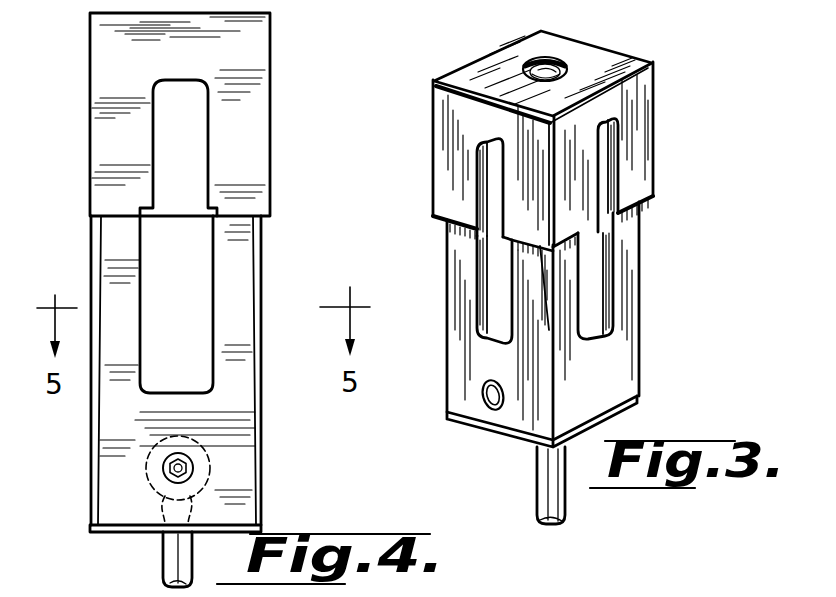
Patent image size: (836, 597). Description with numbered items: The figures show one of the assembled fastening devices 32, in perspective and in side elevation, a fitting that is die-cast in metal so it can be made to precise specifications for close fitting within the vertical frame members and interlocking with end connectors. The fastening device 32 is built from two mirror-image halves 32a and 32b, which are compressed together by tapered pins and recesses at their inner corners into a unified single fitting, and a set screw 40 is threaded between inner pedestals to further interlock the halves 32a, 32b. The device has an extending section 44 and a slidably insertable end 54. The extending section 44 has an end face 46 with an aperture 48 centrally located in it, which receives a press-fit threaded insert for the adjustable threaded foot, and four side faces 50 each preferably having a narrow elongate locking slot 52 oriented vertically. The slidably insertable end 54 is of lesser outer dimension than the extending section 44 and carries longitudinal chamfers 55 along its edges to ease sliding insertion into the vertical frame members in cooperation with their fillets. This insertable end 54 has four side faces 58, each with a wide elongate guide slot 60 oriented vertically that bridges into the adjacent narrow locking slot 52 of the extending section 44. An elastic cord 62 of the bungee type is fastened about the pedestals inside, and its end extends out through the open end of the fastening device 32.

In FIG. 4, the fastening device 32 is at (280, 58).
In FIG. 3, the fastening device 32 is at (668, 82).
In FIG. 3, the mirror-image half 32a is at (540, 48).
In FIG. 3, the mirror-image half 32b is at (433, 108).
In FIG. 3, the set screw 40 is at (488, 408).
In FIG. 4, the extending section 44 is at (272, 83).
In FIG. 3, the extending section 44 is at (655, 120).
In FIG. 3, the end face 46 is at (474, 76).
In FIG. 3, the aperture 48 is at (567, 68).
In FIG. 4, the side face 50 is at (250, 118).
In FIG. 3, the side face 50 is at (442, 163).
In FIG. 4, the locking slot 52 is at (204, 162).
In FIG. 3, the locking slot 52 is at (477, 202).
In FIG. 4, the slidably insertable end 54 is at (237, 405).
In FIG. 3, the slidably insertable end 54 is at (620, 317).
In FIG. 4, the longitudinal chamfer 55 is at (100, 260).
In FIG. 3, the longitudinal chamfer 55 is at (643, 238).
In FIG. 4, the side face 58 is at (240, 338).
In FIG. 3, the side face 58 is at (625, 353).
In FIG. 4, the guide slot 60 is at (187, 287).
In FIG. 3, the guide slot 60 is at (597, 275).
In FIG. 4, the elastic cord 62 is at (170, 560).
In FIG. 3, the elastic cord 62 is at (537, 497).